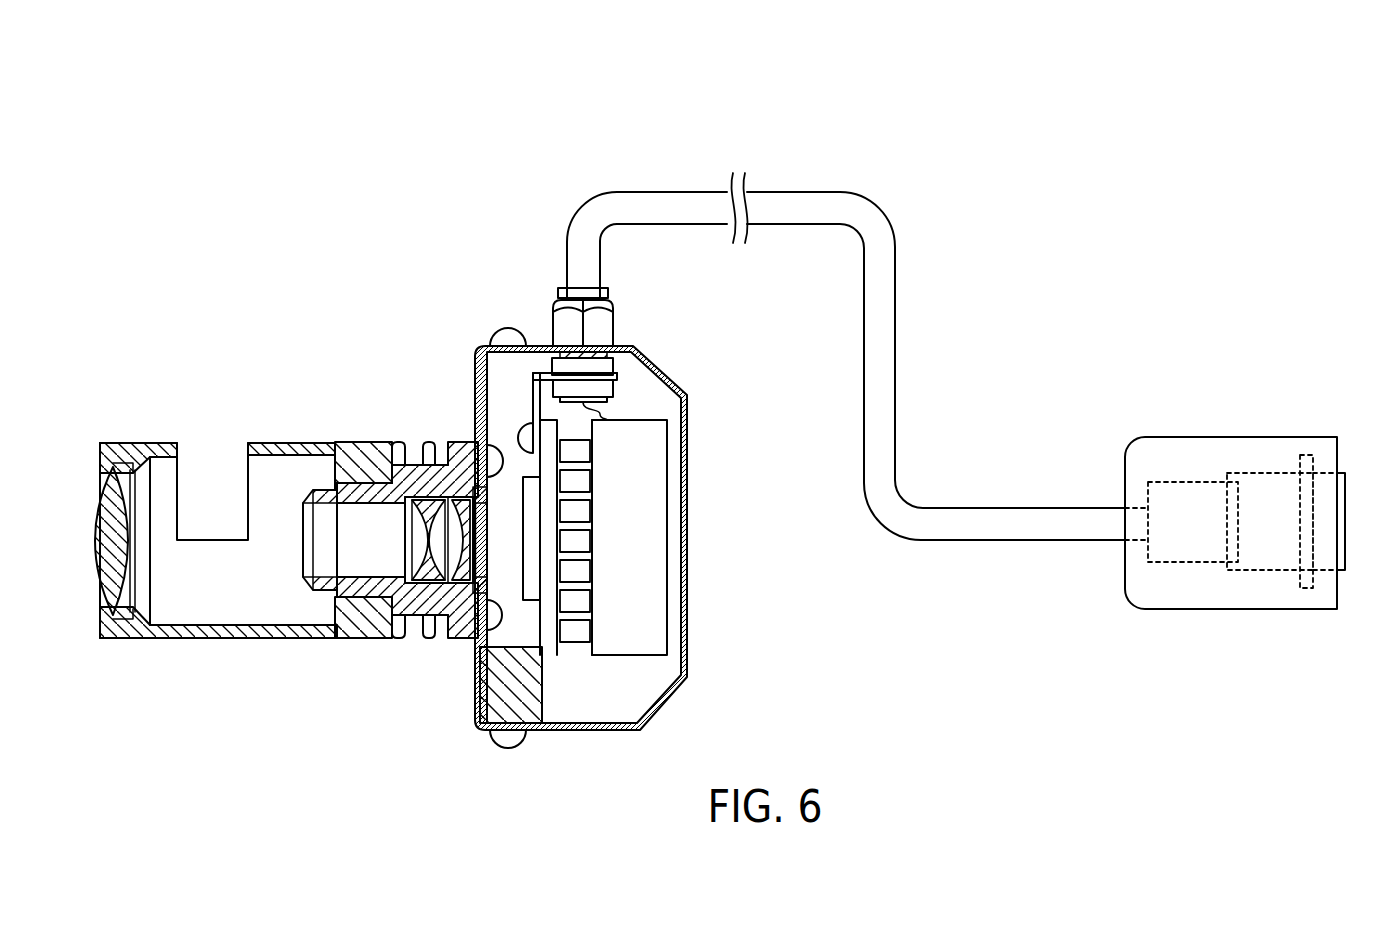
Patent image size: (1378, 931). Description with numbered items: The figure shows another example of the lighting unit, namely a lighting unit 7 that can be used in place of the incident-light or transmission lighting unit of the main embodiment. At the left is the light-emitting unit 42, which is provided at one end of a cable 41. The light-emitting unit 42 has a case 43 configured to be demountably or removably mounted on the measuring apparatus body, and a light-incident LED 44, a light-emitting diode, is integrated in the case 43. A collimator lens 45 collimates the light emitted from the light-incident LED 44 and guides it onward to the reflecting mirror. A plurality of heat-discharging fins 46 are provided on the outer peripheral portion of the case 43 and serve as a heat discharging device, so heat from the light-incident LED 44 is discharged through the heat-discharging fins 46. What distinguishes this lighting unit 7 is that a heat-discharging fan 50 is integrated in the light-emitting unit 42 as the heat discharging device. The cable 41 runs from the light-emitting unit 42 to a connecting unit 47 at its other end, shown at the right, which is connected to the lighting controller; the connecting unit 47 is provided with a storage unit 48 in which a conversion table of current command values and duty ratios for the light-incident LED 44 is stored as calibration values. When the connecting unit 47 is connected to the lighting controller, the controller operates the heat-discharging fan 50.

The lighting unit 7 is at (617, 127).
The cable 41 is at (805, 190).
The light-emitting unit 42 is at (188, 352).
The case 43 is at (363, 628).
The light-incident LED 44 is at (480, 598).
The collimator lens 45 is at (97, 549).
The heat-discharging fins 46 is at (428, 635).
The connecting unit 47 is at (1187, 610).
The storage unit 48 is at (1263, 480).
The heat-discharging fan 50 is at (640, 545).